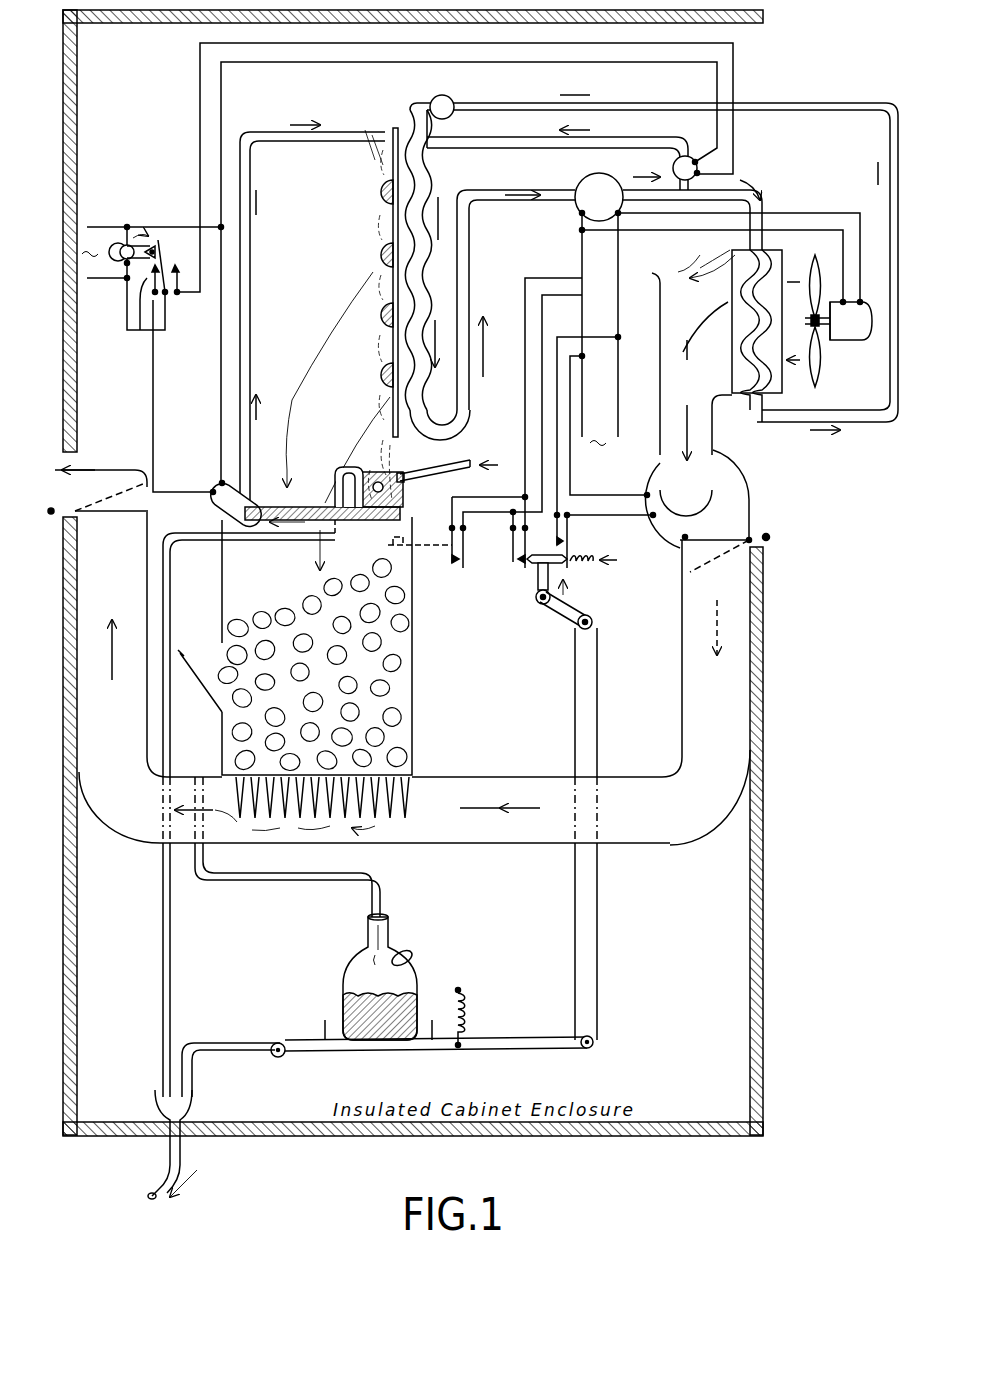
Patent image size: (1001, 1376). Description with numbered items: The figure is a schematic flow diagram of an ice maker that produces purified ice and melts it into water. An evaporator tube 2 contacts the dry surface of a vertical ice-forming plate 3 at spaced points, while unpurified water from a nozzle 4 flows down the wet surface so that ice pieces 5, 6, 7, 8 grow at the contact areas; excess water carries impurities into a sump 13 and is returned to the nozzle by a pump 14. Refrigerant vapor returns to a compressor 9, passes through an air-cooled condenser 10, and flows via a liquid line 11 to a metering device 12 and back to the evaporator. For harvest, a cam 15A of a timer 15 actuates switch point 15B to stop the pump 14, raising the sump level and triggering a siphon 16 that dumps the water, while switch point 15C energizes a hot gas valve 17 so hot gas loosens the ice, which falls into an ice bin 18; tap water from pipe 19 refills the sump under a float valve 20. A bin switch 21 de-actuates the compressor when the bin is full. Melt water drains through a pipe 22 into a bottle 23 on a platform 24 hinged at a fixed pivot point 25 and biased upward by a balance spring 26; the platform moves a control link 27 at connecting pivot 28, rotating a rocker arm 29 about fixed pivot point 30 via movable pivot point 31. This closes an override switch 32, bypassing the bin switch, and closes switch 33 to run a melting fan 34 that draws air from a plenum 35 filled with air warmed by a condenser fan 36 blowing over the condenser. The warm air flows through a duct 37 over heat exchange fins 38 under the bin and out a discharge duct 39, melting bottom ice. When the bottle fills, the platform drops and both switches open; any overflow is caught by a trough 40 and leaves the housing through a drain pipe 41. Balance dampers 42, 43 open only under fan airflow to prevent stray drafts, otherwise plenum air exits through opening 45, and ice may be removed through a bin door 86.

The evaporator tube 2 is at (430, 168).
The vertical ice-forming plate 3 is at (398, 118).
The nozzle 4 is at (380, 130).
The ice piece 5 is at (381, 192).
The ice piece 6 is at (381, 258).
The ice piece 7 is at (381, 318).
The ice piece 8 is at (381, 372).
The compressor 9 is at (582, 170).
The air-cooled condenser 10 is at (778, 398).
The liquid line 11 is at (862, 428).
The metering device 12 is at (454, 100).
The sump 13 is at (370, 520).
The pump 14 is at (262, 496).
The timer 15 is at (108, 297).
The cam 15A is at (165, 255).
The switch point 15B is at (162, 378).
The switch point 15C is at (182, 280).
The siphon 16 is at (336, 468).
The hot gas valve 17 is at (672, 162).
The ice bin 18 is at (414, 688).
The tap water pipe 19 is at (450, 468).
The float valve 20 is at (386, 490).
The bin switch 21 is at (450, 576).
The drain pipe 22 is at (248, 888).
The bottle 23 is at (337, 953).
The platform 24 is at (400, 1055).
The positionally fixed pivot point 25 is at (275, 1058).
The balance spring 26 is at (470, 1000).
The control link 27 is at (604, 882).
The connecting pivot 28 is at (582, 1052).
The rocker arm 29 is at (548, 622).
The fixed pivot point 30 is at (536, 606).
The movable pivot point 31 is at (594, 620).
The override switch 32 is at (512, 576).
The switch 33 is at (580, 543).
The melting fan 34 is at (668, 527).
The plenum 35 is at (640, 318).
The condenser fan 36 is at (850, 343).
The duct 37 is at (735, 695).
The heat exchange fins 38 is at (395, 825).
The discharge duct 39 is at (88, 700).
The trough 40 is at (318, 1036).
The drain pipe 41 is at (232, 1040).
The balance damper 42 is at (50, 508).
The balance damper 43 is at (772, 540).
The opening 45 is at (645, 262).
The bin door 86 is at (190, 640).